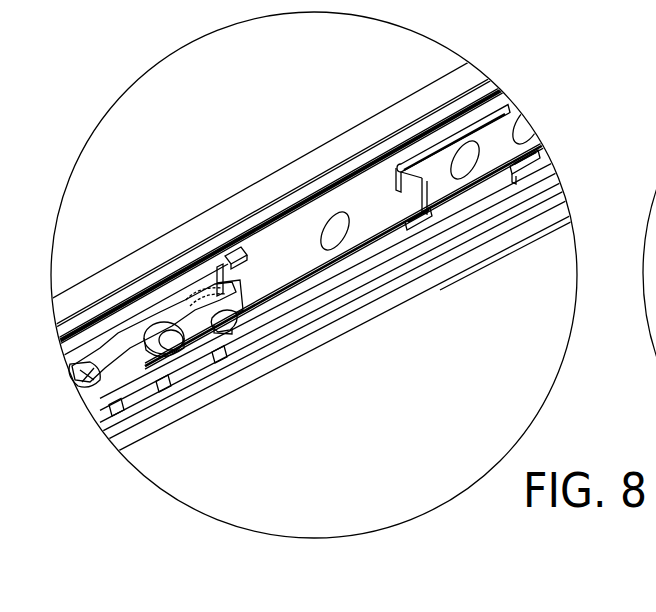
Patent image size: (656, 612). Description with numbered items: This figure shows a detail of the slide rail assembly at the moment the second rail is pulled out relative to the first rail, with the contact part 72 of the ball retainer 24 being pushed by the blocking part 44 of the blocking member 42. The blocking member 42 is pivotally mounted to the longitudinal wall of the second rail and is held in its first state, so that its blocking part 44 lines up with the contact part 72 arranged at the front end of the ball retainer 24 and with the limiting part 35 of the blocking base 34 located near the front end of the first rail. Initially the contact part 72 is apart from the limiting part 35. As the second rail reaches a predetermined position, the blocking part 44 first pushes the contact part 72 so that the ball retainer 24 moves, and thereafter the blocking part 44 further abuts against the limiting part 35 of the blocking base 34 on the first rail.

The ball retainer 24 is at (198, 368).
The blocking base 34 is at (438, 185).
The limiting part 35 is at (399, 166).
The blocking member 42 is at (168, 293).
The blocking part 44 is at (229, 253).
The contact part 72 is at (240, 257).